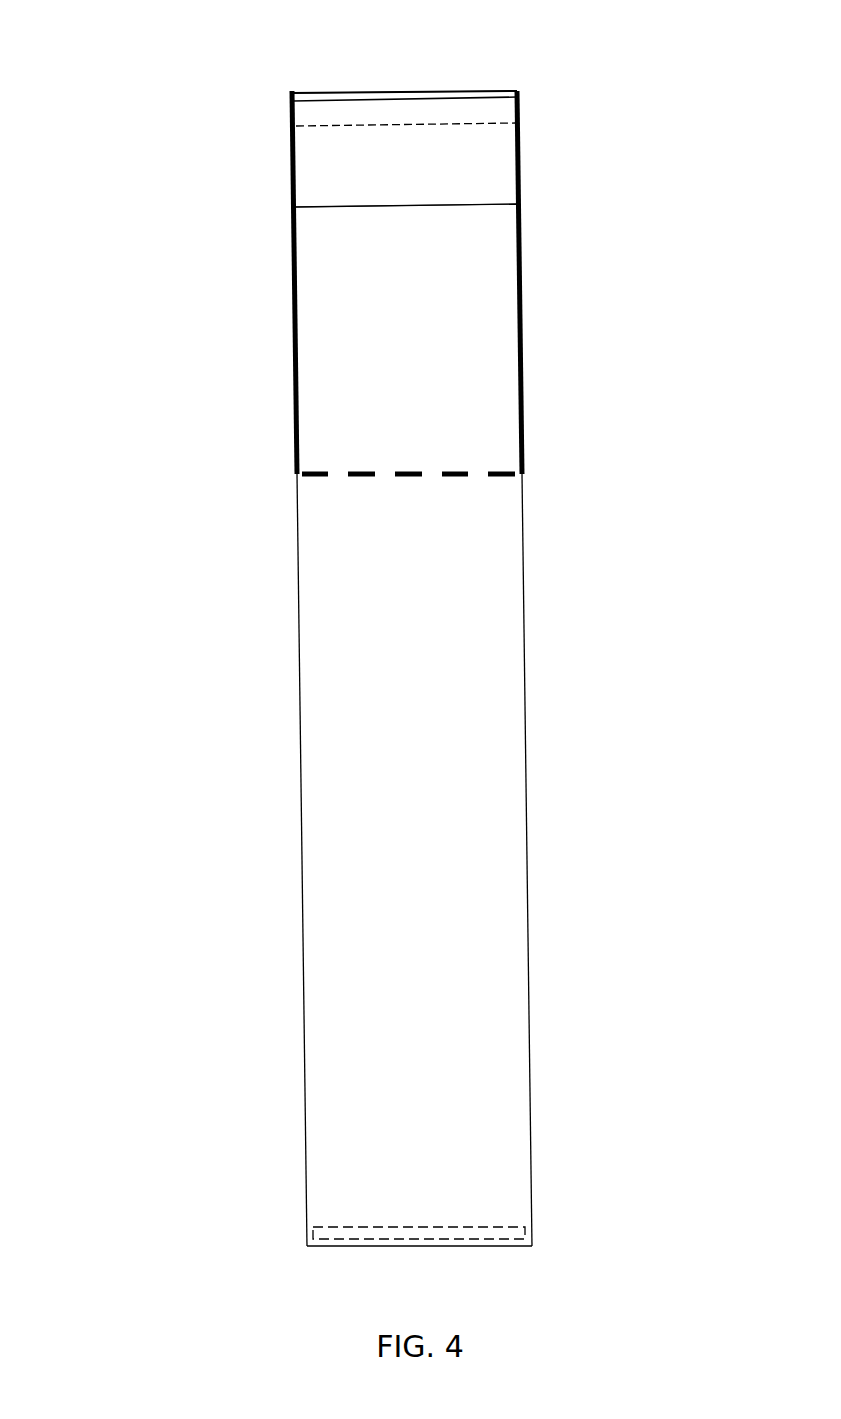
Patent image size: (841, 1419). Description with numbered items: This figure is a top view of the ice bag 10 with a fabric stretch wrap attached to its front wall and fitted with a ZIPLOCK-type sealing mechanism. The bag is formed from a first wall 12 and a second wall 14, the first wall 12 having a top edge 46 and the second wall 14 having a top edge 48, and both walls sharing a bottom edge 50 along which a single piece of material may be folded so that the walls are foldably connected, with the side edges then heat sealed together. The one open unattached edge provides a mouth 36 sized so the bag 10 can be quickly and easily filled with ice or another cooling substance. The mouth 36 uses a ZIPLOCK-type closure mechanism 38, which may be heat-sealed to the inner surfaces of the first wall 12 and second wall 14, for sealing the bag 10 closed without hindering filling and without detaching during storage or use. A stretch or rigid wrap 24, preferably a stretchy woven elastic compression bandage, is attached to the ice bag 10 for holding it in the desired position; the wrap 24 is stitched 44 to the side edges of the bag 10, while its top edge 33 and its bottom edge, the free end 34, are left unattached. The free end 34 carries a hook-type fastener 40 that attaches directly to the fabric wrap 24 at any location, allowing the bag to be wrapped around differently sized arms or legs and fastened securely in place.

The ice bag 10 is at (158, 85).
The first wall 12 is at (418, 94).
The second wall 14 is at (394, 177).
The wrap 24 is at (395, 364).
The top edge of wrap 33 is at (314, 208).
The free end of wrap 34 is at (458, 1247).
The mouth 36 is at (473, 92).
The closure mechanism 38 is at (311, 128).
The hook-type fastener 40 is at (513, 1230).
The stitching 44 is at (556, 203).
The top edge of first wall 46 is at (313, 92).
The top edge of second wall 48 is at (367, 98).
The bottom edge 50 is at (320, 478).